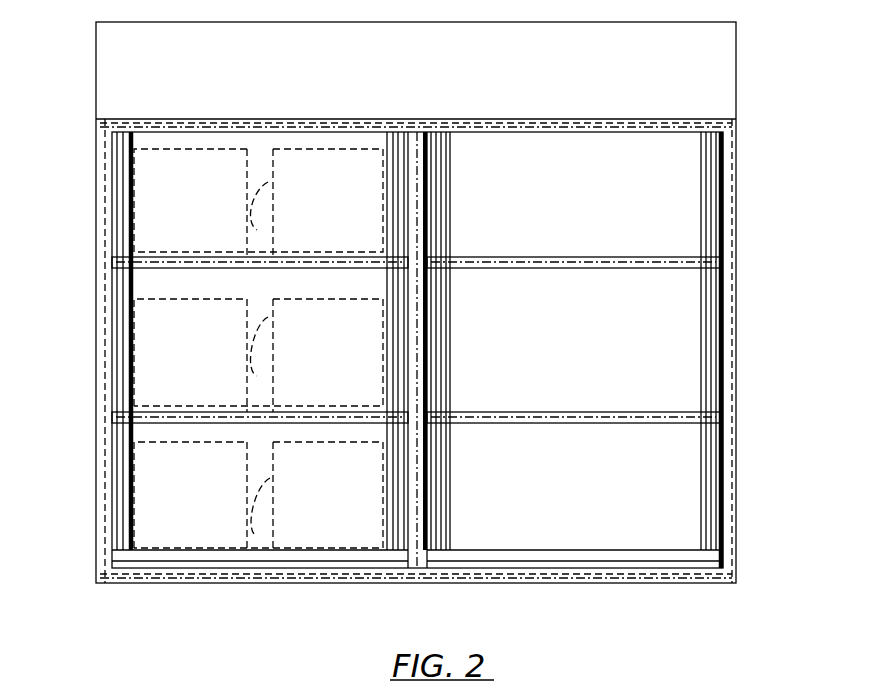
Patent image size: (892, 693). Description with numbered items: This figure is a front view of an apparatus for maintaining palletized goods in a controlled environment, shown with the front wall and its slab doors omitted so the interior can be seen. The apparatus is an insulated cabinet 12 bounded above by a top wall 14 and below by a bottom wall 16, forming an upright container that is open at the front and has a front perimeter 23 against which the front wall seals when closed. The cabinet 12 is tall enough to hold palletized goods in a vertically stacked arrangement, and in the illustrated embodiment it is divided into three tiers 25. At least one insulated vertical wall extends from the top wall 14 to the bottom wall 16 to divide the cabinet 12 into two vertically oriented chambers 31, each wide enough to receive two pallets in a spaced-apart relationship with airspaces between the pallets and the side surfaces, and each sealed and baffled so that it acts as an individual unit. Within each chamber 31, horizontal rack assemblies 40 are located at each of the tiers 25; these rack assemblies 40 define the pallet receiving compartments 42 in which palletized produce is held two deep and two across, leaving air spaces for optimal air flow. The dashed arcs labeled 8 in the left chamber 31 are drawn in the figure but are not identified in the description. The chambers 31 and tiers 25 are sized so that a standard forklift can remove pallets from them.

The door 8 is at (260, 359).
The insulated cabinet 12 is at (78, 236).
The top wall 14 is at (112, 118).
The bottom wall 16 is at (165, 585).
The front perimeter 23 is at (733, 126).
The tiers 25 is at (645, 175).
The vertically oriented chambers 31 is at (305, 506).
The horizontal rack assemblies 40 is at (110, 264).
The pallet receiving compartments 42 is at (272, 167).